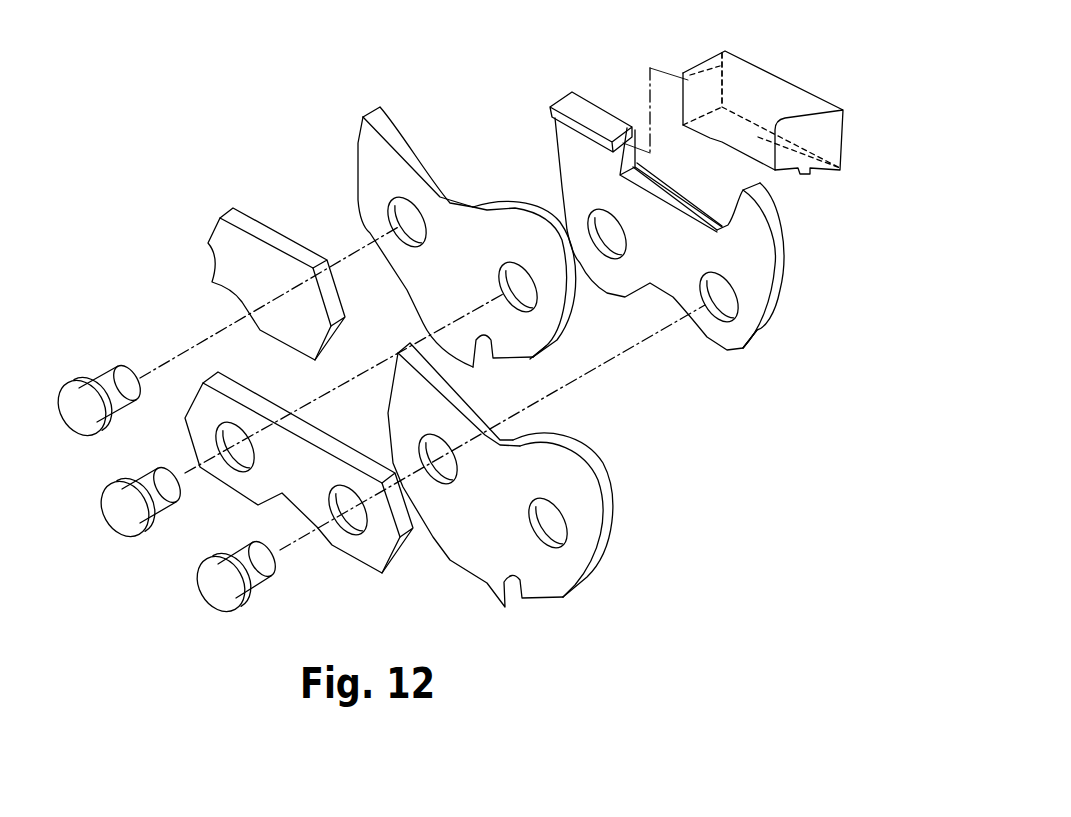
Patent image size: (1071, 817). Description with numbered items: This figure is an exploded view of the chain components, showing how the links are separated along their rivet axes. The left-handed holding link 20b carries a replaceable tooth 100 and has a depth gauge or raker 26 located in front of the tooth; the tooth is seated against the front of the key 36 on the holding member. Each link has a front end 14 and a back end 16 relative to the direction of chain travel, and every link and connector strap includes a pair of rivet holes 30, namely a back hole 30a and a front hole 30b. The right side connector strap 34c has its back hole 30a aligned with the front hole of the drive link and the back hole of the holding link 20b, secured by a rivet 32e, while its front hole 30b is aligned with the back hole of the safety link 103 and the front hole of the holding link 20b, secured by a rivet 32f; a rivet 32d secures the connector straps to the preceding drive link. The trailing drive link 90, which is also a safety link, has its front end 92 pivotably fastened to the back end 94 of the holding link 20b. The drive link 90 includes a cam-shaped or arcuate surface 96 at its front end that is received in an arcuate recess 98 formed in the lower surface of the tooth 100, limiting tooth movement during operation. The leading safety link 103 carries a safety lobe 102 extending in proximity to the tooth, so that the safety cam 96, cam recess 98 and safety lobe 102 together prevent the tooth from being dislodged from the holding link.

The front end 14 is at (674, 193).
The back end 16 is at (608, 128).
The left-handed holding link 20b is at (753, 283).
The depth gauge or raker 26 is at (753, 215).
The rivet holes 30 is at (270, 285).
The back hole 30a is at (233, 455).
The front hole 30b is at (348, 522).
The rivet 32d is at (78, 425).
The rivet 32e is at (125, 527).
The rivet 32f is at (218, 600).
The right side connector strap 34c is at (290, 413).
The key 36 is at (592, 112).
The drive link 90 is at (557, 343).
The front end 92 is at (522, 332).
The back end 94 is at (580, 187).
The cam-shaped or arcuate surface 96 is at (495, 251).
The cam-shaped or arcuate recess 98 is at (758, 137).
The tooth 100 is at (780, 98).
The safety lobe 102 is at (407, 380).
The safety link 103 is at (508, 475).